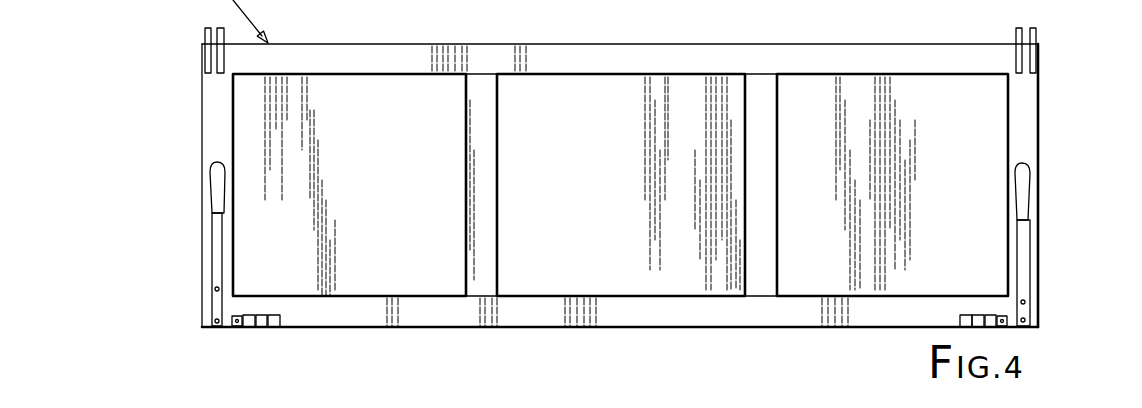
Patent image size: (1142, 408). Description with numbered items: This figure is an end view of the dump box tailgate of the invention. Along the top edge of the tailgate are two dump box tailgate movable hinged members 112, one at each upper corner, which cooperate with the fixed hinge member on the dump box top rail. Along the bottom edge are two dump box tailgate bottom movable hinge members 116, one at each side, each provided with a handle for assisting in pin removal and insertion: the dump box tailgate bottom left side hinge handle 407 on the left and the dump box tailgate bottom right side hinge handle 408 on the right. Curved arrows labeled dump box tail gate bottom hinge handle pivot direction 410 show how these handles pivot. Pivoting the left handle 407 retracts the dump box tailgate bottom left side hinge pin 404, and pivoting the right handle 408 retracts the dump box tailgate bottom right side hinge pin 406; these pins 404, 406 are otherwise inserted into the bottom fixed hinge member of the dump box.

The dump box tailgate movable hinged member 112 is at (207, 27).
The dump box tailgate bottom movable hinge member 116 is at (190, 241).
The dump box tailgate bottom left side hinge pin 404 is at (259, 327).
The dump box tailgate bottom right side hinge pin 406 is at (977, 316).
The dump box tailgate bottom left side hinge handle 407 is at (215, 181).
The dump box tailgate bottom right side hinge handle 408 is at (1022, 182).
The dump box tail gate bottom hinge handle pivot direction 410 is at (284, 195).